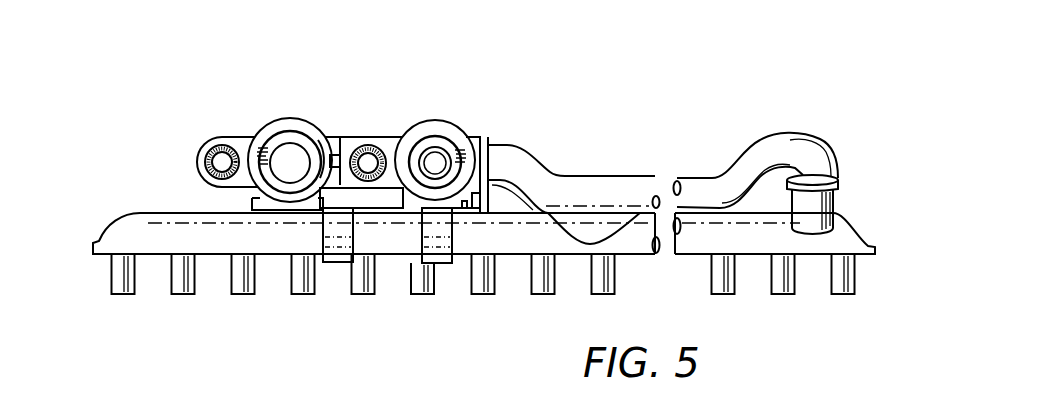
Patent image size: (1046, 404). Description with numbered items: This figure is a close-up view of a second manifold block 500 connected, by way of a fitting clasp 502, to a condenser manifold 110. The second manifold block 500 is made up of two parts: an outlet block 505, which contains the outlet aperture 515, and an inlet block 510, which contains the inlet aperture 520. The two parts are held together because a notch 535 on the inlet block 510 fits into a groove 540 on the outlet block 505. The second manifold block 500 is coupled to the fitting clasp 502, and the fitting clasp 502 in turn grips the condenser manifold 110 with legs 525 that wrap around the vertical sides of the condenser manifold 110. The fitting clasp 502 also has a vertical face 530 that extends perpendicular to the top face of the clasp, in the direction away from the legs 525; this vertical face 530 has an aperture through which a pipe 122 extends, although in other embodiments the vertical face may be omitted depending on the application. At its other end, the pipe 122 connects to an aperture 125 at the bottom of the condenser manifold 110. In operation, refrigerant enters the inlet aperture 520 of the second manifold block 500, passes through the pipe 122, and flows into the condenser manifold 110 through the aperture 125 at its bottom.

The condenser manifold 110 is at (98, 242).
The pipe 122 is at (587, 176).
The aperture 125 is at (838, 202).
The second manifold block 500 is at (377, 191).
The fitting clasp 502 is at (300, 202).
The outlet block 505 is at (260, 209).
The inlet block 510 is at (426, 221).
The outlet aperture 515 is at (284, 175).
The inlet aperture 520 is at (433, 168).
The legs 525 is at (340, 263).
The vertical face 530 is at (526, 141).
The notch 535 is at (337, 162).
The groove 540 is at (322, 177).